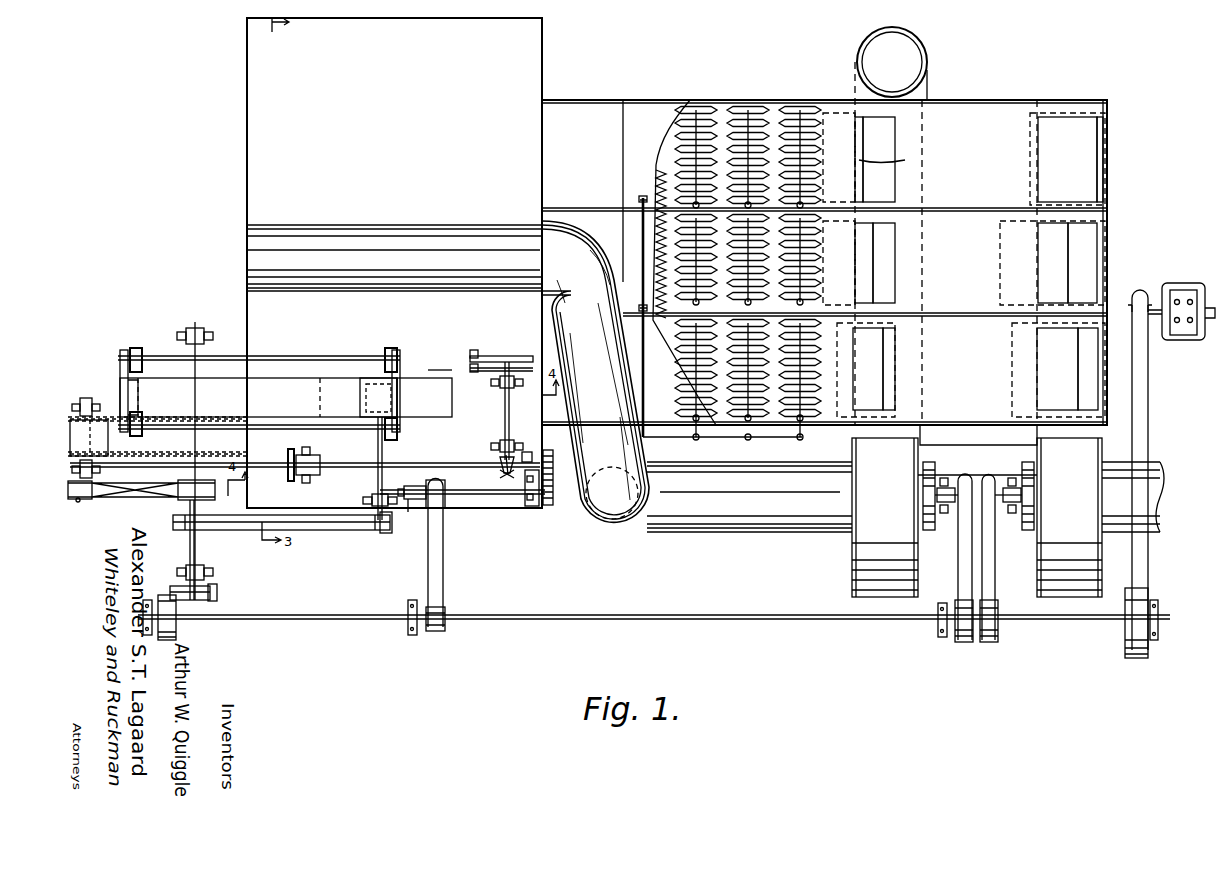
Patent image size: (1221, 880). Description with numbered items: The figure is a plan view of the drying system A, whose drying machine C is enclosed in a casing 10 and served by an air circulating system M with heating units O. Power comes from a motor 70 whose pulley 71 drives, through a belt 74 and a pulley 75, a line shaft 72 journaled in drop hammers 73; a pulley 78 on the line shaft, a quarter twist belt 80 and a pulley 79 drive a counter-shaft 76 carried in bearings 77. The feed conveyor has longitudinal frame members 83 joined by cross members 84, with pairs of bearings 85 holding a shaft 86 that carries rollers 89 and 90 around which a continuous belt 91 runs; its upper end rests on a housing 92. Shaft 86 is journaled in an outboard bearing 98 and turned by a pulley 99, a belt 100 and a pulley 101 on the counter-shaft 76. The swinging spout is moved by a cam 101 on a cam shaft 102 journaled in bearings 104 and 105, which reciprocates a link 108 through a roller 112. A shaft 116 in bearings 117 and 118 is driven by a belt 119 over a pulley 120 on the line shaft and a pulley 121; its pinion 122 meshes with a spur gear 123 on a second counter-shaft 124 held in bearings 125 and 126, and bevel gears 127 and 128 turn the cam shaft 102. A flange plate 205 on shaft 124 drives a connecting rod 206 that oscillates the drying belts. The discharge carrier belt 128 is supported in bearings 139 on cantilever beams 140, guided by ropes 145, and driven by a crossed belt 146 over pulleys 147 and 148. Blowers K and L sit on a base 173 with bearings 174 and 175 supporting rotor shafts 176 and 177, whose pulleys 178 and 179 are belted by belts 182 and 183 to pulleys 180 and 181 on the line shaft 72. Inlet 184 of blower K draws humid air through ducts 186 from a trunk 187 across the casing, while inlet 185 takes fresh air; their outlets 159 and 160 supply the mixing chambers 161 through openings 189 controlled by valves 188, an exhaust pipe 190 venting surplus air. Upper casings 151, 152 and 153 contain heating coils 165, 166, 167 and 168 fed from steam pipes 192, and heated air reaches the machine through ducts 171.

The casing 10 is at (247, 100).
The motor 70 is at (1180, 283).
The pulley 71 is at (1133, 300).
The line shaft 72 is at (728, 614).
The drop hammer 73 is at (148, 600).
The belt 74 is at (1140, 418).
The pulley 75 is at (1128, 652).
The counter-shaft 76 is at (198, 550).
The bearings 77 is at (202, 330).
The pulley 78 is at (178, 628).
The pulley 79 is at (212, 588).
The quarter twist belt 80 is at (218, 598).
The longitudinal frame members 83 is at (334, 424).
The cross members 84 is at (124, 390).
The bearings 85 is at (140, 414).
The shaft 86 is at (384, 470).
The roller 89 is at (128, 385).
The roller 90 is at (386, 380).
The continuous belt 91 is at (272, 385).
The housing 92 is at (352, 378).
The outboard bearing 98 is at (372, 500).
The pulley 99 is at (378, 533).
The belt 100 is at (333, 531).
The pulley and cam 101 is at (515, 356).
The cam shaft 102 is at (511, 396).
The bearing 104 is at (496, 384).
The bearing 105 is at (493, 446).
The reciprocating link 108 is at (430, 372).
The roller 112 is at (475, 350).
The shaft 116 is at (484, 497).
The bearing 117 is at (410, 505).
The bearing 118 is at (554, 506).
The belt 119 is at (437, 567).
The pulley 120 is at (442, 632).
The pulley 121 is at (447, 500).
The pinion 122 is at (550, 507).
The spur gear 123 is at (558, 462).
The second counter-shaft 124 is at (440, 465).
The bearing 125 is at (305, 467).
The bearing 126 is at (530, 454).
The bevel gear 127 is at (514, 480).
The bevel gear 128 is at (262, 468).
The bearings 139 is at (102, 398).
The cantilever beams 140 is at (176, 462).
The ropes or cables 145 is at (225, 450).
The crossed belt 146 is at (160, 497).
The pulley 147 is at (180, 490).
The pulley 148 is at (75, 499).
The casing 151 is at (960, 340).
The casing 152 is at (958, 235).
The casing 153 is at (778, 108).
The exhaust outlet 159 is at (880, 452).
The exhaust outlet 160 is at (1082, 452).
The mixing chambers 161 is at (950, 120).
The heating coil 165 is at (660, 172).
The heating coil 166 is at (688, 130).
The heating coil 167 is at (746, 108).
The heating coil 168 is at (792, 130).
The duct 171 is at (568, 218).
The base 173 is at (970, 455).
The bearing 174 is at (938, 496).
The bearing 175 is at (1018, 496).
The rotor shaft 176 is at (955, 478).
The rotor shaft 177 is at (996, 476).
The pulley 178 is at (958, 512).
The pulley 179 is at (995, 512).
The pulley 180 is at (960, 642).
The pulley 181 is at (1000, 642).
The belt 182 is at (958, 600).
The belt 183 is at (990, 600).
The inlet 184 is at (850, 540).
The inlet 185 is at (1112, 502).
The ducts 186 is at (560, 248).
The trunk 187 is at (278, 248).
The valves 188 is at (905, 158).
The openings 189 is at (870, 235).
The exhaust pipe 190 is at (928, 52).
The steam pipes 192 is at (640, 213).
The flange plate 205 is at (291, 455).
The connecting rod 206 is at (275, 462).
The drying system A is at (585, 112).
The drying machine C is at (262, 62).
The blower K is at (858, 590).
The blower L is at (1082, 597).
The air circulating system M is at (990, 118).
The heating units O is at (700, 128).